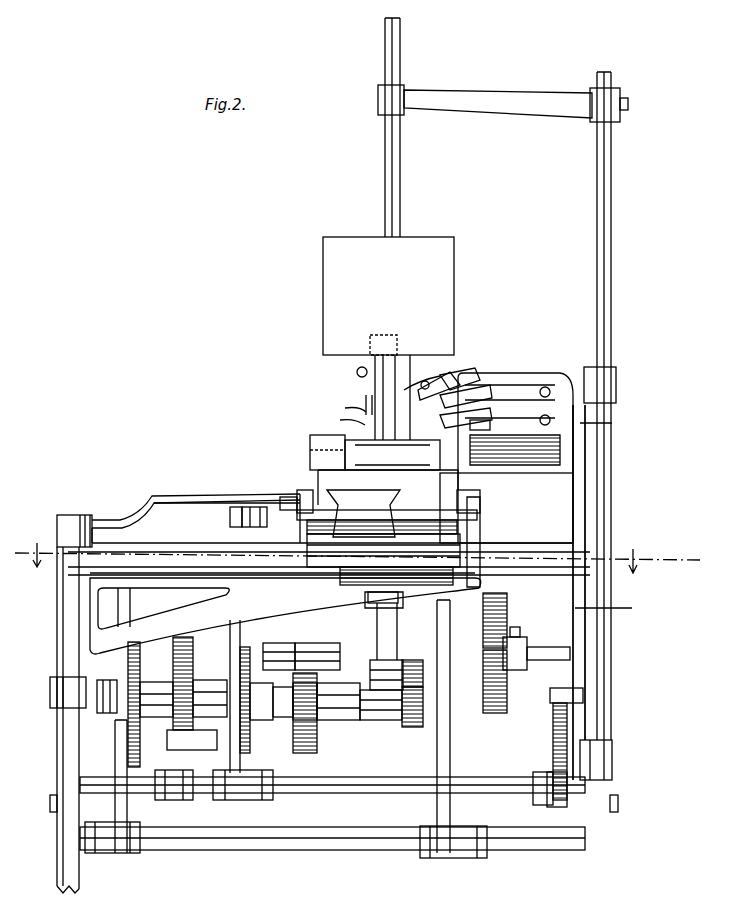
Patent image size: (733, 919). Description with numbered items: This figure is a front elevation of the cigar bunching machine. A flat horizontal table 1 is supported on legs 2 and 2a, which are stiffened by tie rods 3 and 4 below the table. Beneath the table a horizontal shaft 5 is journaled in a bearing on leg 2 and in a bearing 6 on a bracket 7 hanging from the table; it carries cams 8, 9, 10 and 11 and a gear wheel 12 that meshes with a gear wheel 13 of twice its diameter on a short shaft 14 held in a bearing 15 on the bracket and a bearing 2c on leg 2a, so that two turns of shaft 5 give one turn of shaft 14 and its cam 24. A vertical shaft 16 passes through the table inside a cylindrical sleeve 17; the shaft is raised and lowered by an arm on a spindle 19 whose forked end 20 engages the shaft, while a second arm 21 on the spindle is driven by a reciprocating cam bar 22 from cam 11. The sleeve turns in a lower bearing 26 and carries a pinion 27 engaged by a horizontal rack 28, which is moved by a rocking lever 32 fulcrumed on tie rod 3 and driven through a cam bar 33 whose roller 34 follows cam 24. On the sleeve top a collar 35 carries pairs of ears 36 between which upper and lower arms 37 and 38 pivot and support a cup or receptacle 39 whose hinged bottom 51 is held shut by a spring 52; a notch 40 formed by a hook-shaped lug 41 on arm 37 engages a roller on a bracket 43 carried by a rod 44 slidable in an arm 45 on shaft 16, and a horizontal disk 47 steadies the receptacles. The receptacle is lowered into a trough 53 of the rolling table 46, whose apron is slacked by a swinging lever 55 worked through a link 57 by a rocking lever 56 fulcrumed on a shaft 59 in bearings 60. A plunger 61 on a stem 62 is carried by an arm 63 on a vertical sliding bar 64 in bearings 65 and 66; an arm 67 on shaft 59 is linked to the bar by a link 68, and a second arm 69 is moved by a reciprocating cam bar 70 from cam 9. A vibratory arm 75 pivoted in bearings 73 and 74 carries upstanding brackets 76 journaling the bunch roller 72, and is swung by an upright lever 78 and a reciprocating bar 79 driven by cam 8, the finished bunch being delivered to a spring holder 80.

The table 1 is at (197, 540).
The leg 2 is at (57, 740).
The leg 2a is at (612, 685).
The bearing 2c is at (573, 640).
The tie rod 3 is at (330, 850).
The tie rod 4 is at (352, 558).
The horizontal shaft 5 is at (348, 720).
The bearing 6 is at (385, 720).
The bracket 7 is at (377, 620).
The cam 8 is at (150, 652).
The cam 9 is at (193, 648).
The cam 10 is at (263, 643).
The cam disk 11 is at (317, 745).
The gear wheel 12 is at (412, 727).
The gear wheel 13 is at (423, 672).
The short shaft 14 is at (545, 660).
The bearing 15 is at (370, 637).
The vertical shaft 16 is at (375, 385).
The cylindrical sleeve 17 is at (410, 370).
The spindle 19 is at (320, 643).
The forked end 20 is at (338, 698).
The second arm 21 is at (272, 720).
The reciprocating cam bar 22 is at (258, 745).
The cam 24 is at (504, 681).
The second bearing 26 is at (375, 585).
The pinion 27 is at (340, 567).
The horizontal rack 28 is at (430, 530).
The rocking lever 32 is at (462, 810).
The reciprocating cam bar 33 is at (507, 615).
The roller 34 is at (515, 627).
The collar 35 is at (450, 372).
The ears 36 is at (402, 417).
The upper arm 37 is at (355, 425).
The lower arm 38 is at (462, 425).
The cup or receptacle 39 is at (556, 480).
The notch 40 is at (480, 375).
The hook-shaped lug 41 is at (375, 397).
The bracket 43 is at (366, 400).
The rod 44 is at (360, 370).
The arm 45 is at (397, 345).
The rolling table 46 is at (477, 515).
The horizontal disk 47 is at (310, 457).
The inclined bottom 51 is at (512, 468).
The spring 52 is at (520, 448).
The trough 53 is at (455, 560).
The swinging lever 55 is at (282, 494).
The rocking lever 56 is at (248, 815).
The link 57 is at (255, 507).
The shaft 59 is at (356, 793).
The bearings 60 is at (628, 808).
The plunger 61 is at (388, 296).
The stem 62 is at (400, 172).
The arm 63 is at (514, 100).
The vertical sliding bar 64 is at (611, 275).
The bearing 65 is at (616, 385).
The bearing 66 is at (612, 757).
The arm 67 is at (553, 743).
The link 68 is at (613, 609).
The second arm 69 is at (167, 756).
The reciprocating cam bar 70 is at (205, 680).
The bunch roller 72 is at (471, 493).
The bearing 73 is at (57, 523).
The bearing 74 is at (50, 690).
The vibratory arm 75 is at (285, 613).
The upstanding brackets 76 is at (510, 536).
The upright lever 78 is at (115, 738).
The reciprocating bar 79 is at (110, 680).
The spring holder 80 is at (365, 512).